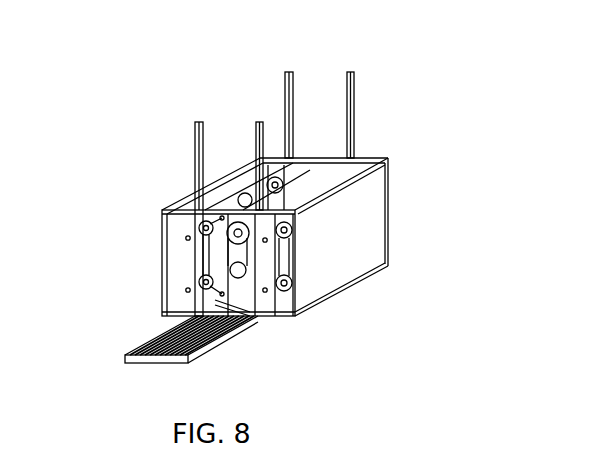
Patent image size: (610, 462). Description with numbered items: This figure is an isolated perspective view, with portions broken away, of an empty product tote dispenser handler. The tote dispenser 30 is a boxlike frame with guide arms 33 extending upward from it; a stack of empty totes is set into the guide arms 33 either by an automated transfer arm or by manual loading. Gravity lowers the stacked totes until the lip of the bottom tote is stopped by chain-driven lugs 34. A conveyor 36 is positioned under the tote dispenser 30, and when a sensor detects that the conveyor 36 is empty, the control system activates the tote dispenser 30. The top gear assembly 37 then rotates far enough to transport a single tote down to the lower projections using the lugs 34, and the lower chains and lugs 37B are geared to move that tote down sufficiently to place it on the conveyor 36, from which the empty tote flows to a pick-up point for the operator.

The tote dispenser 30 is at (317, 252).
The guide arms 33 is at (321, 182).
The chain-driven lugs 34 is at (270, 256).
The conveyor 36 is at (140, 328).
The top gear assembly 37 is at (160, 233).
The lower chains and lugs 37B is at (278, 328).